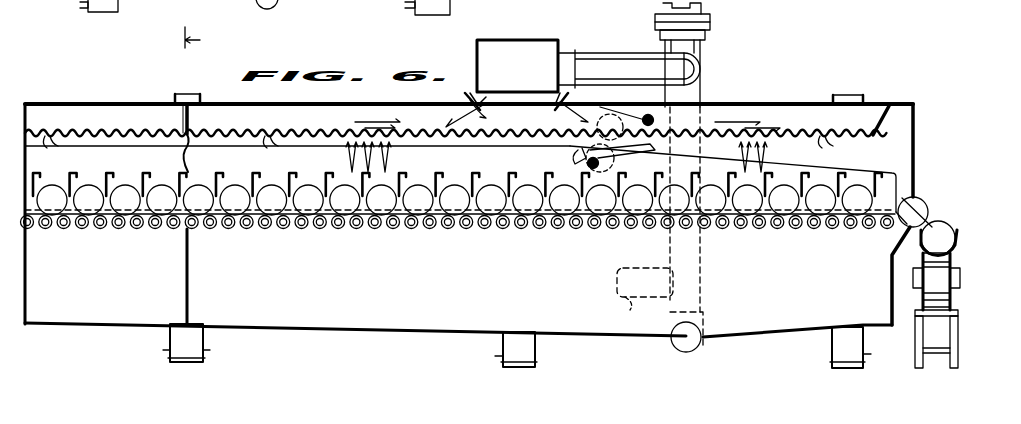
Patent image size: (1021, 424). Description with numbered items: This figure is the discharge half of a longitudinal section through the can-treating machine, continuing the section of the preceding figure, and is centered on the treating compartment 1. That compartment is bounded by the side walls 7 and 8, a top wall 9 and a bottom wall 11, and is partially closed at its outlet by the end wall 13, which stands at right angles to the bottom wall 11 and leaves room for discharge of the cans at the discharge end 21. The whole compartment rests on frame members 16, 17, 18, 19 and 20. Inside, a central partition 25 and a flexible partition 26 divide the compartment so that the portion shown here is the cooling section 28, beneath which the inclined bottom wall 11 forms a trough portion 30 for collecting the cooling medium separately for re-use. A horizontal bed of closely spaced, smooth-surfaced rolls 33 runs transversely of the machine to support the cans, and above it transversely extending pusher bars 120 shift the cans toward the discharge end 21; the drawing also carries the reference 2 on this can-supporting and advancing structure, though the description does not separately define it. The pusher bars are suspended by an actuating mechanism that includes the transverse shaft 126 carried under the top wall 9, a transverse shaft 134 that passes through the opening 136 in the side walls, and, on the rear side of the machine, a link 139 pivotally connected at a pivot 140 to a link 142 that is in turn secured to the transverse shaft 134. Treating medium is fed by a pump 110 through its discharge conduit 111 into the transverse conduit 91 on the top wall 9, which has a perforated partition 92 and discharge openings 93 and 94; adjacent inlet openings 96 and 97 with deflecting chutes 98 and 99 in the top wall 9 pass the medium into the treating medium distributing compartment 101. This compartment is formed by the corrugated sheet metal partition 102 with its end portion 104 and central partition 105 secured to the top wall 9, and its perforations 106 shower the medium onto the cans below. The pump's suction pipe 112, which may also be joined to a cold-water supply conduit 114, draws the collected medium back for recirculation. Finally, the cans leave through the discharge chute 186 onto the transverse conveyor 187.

The treating compartment 1 is at (26, 158).
The conveyor 2 is at (356, 236).
The side wall 7 is at (199, 39).
The side wall 8 is at (906, 158).
The top wall 9 is at (801, 103).
The bottom wall 11 is at (634, 336).
The end wall 13 is at (889, 285).
The frame member 16 is at (95, 13).
The frame member 17 is at (452, 5).
The frame member 18 is at (206, 345).
The frame member 19 is at (504, 348).
The frame member 20 is at (832, 355).
The discharge end 21 is at (905, 180).
The central partition 25 is at (190, 272).
The flexible partition 26 is at (192, 160).
The cooling section 28 is at (508, 168).
The trough portion 30 is at (566, 335).
The rolls 33 is at (99, 234).
The transverse conduit 91 is at (523, 41).
The perforated partition 92 is at (548, 86).
The discharge opening 93 is at (476, 100).
The discharge opening 94 is at (618, 80).
The inlet opening 96 is at (452, 108).
The inlet opening 97 is at (574, 104).
The deflecting chute 98 is at (476, 104).
The deflecting chute 99 is at (566, 106).
The treating medium distributing compartment 101 is at (320, 126).
The corrugated sheet metal partition 102 is at (96, 137).
The end portion 104 is at (879, 130).
The central partition 105 is at (191, 113).
The perforations 106 is at (46, 140).
The pump 110 is at (702, 48).
The discharge conduit 111 is at (622, 62).
The suction pipe 112 is at (701, 283).
The supply conduit 114 is at (626, 300).
The pusher bars 120 is at (144, 172).
The transverse shaft 126 is at (655, 120).
The transverse shaft 134 is at (584, 162).
The opening 136 is at (652, 150).
The link 139 is at (650, 99).
The pivot 140 is at (620, 89).
The link 142 is at (601, 164).
The discharge chute 186 is at (931, 207).
The transverse conveyor 187 is at (942, 268).